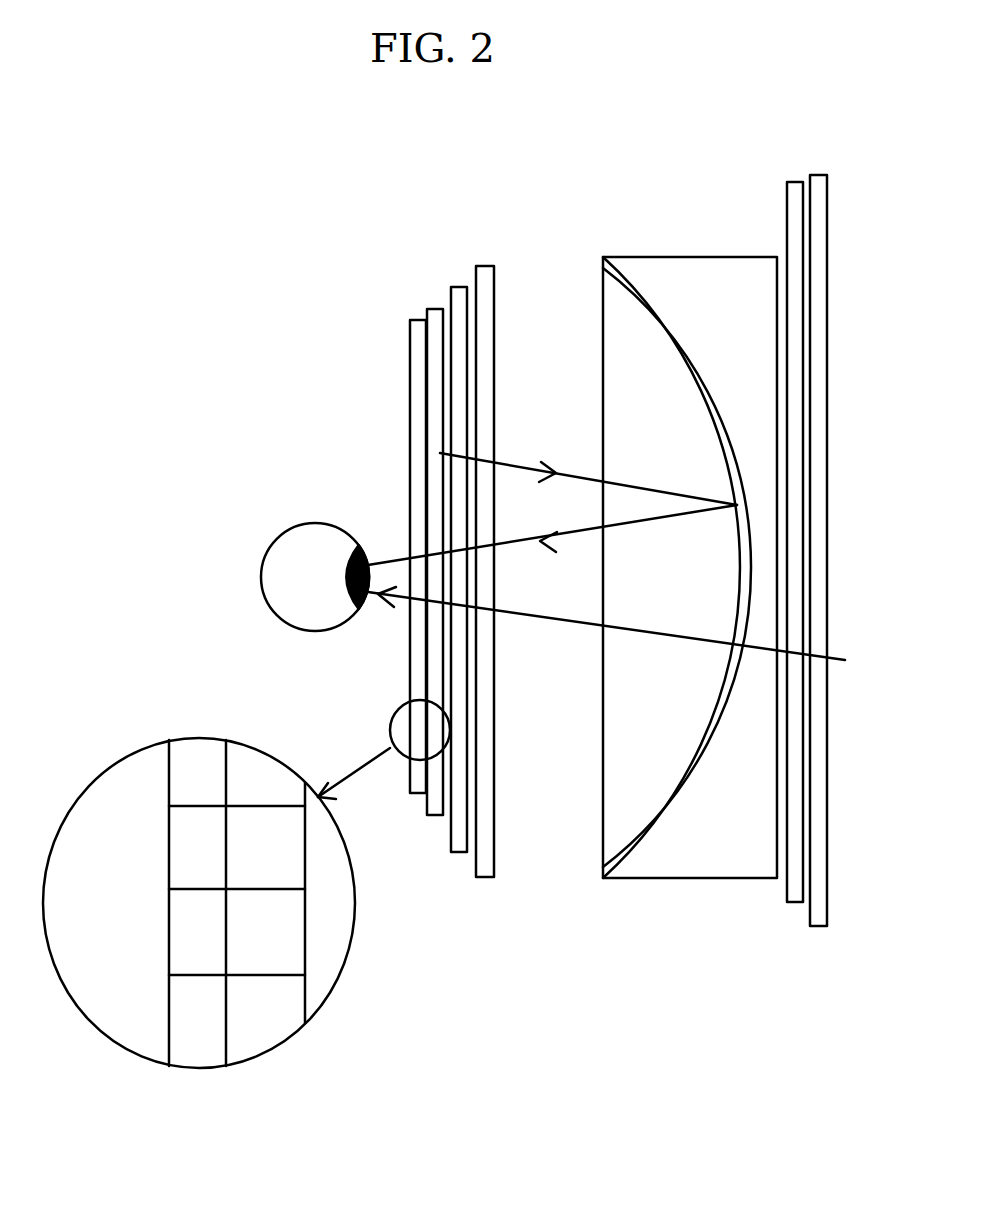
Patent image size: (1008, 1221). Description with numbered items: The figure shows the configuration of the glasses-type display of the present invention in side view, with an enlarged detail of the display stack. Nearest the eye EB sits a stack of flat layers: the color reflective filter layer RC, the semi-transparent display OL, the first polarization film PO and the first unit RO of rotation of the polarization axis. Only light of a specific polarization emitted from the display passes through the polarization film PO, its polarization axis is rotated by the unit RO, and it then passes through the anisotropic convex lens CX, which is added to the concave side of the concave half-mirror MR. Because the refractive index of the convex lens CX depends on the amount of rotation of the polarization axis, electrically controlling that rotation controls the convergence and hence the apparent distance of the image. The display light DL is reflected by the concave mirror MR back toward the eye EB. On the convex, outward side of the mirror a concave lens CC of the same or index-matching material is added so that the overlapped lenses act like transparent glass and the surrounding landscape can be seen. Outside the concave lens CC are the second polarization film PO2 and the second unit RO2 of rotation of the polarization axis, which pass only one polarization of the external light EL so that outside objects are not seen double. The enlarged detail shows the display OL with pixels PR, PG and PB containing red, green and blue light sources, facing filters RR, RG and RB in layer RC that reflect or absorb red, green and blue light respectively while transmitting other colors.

The color reflective filter layer RC is at (409, 380).
The semi-transparent display OL is at (440, 309).
The first polarization film PO is at (450, 287).
The first unit of rotation of the polarization axis RO is at (487, 266).
The convex lens CX is at (600, 842).
The concave lens CC is at (692, 265).
The concave half-mirror MR is at (661, 840).
The second unit of rotation of the polarization axis RO2 is at (795, 902).
The second polarization film PO2 is at (820, 927).
The eye EB is at (297, 522).
The light emitted from the transparent display DL is at (552, 496).
The light reflected by outside objects EL is at (626, 636).
The red filter RR is at (197, 847).
The red pixel PR is at (265, 847).
The green filter RG is at (197, 932).
The green pixel PG is at (265, 932).
The blue filter RB is at (197, 999).
The blue pixel PB is at (265, 999).